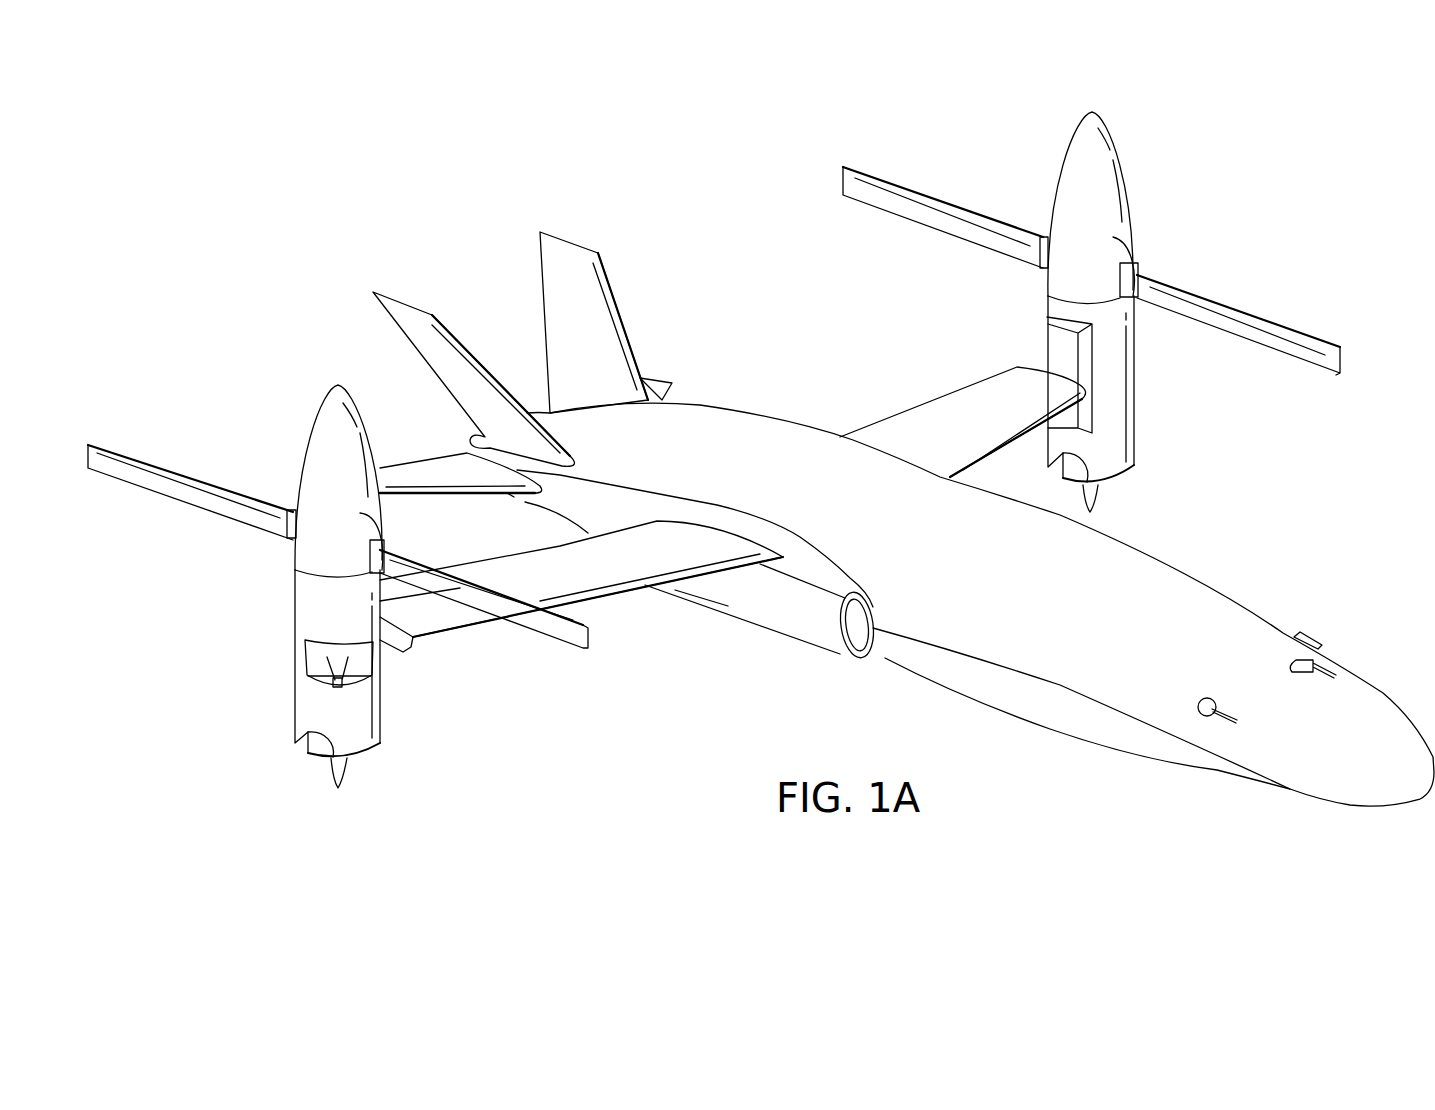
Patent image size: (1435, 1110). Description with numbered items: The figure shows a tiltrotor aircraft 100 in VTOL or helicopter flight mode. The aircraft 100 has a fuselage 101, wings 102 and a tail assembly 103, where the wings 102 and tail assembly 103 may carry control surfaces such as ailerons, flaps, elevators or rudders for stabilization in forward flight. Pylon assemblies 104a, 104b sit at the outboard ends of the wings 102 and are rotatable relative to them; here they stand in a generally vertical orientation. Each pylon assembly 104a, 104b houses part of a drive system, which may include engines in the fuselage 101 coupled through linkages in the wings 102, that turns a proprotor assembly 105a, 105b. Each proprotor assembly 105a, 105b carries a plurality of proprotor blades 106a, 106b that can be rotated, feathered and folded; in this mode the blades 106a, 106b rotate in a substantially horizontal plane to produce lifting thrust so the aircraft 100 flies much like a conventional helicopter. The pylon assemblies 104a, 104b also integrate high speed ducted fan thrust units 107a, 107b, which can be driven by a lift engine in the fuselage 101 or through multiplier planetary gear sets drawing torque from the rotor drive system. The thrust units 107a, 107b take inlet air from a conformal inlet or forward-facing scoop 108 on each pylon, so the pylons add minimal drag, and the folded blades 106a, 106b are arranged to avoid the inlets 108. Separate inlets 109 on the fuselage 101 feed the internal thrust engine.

The tiltrotor aircraft 100 is at (403, 214).
The fuselage 101 is at (758, 412).
The wings 102 is at (510, 560).
The tail assembly 103 is at (541, 272).
The pylon assembly 104a is at (295, 603).
The pylon assembly 104b is at (1135, 385).
The proprotor assembly 105a is at (273, 453).
The proprotor assembly 105b is at (1156, 178).
The proprotor blades 106a is at (193, 511).
The proprotor blades 106b is at (940, 202).
The ducted fan thrust unit 107a is at (315, 760).
The ducted fan thrust unit 107b is at (1070, 485).
The conformal inlet 108 is at (310, 655).
The inlets 109 is at (755, 608).